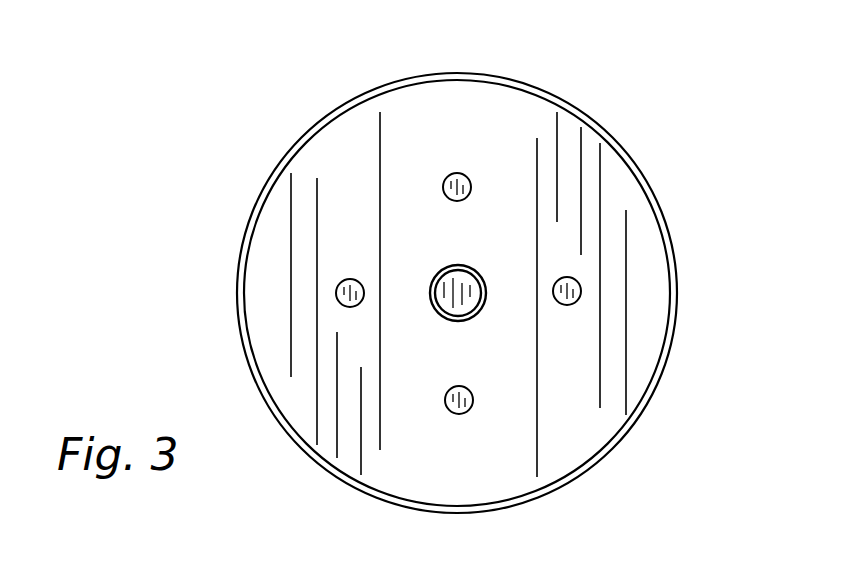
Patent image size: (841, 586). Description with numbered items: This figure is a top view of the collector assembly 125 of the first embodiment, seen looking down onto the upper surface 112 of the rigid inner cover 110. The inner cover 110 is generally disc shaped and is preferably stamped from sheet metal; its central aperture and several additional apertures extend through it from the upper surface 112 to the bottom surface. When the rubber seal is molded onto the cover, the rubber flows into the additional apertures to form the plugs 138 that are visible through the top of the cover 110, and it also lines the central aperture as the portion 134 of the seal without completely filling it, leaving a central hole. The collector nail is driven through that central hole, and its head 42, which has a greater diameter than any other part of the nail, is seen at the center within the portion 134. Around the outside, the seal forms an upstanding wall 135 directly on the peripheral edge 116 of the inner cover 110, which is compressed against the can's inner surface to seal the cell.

The collector assembly 125 is at (596, 84).
The rigid inner cover 110 is at (290, 269).
The upstanding wall 135 is at (628, 157).
The peripheral edge 116 is at (652, 371).
The upper surface 112 is at (567, 415).
The portion of seal 134 is at (480, 272).
The head 42 is at (447, 307).
The plugs 138 is at (337, 296).